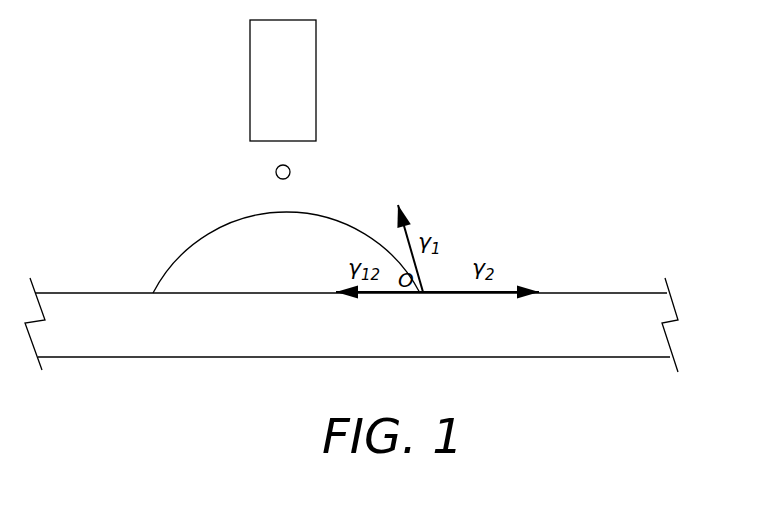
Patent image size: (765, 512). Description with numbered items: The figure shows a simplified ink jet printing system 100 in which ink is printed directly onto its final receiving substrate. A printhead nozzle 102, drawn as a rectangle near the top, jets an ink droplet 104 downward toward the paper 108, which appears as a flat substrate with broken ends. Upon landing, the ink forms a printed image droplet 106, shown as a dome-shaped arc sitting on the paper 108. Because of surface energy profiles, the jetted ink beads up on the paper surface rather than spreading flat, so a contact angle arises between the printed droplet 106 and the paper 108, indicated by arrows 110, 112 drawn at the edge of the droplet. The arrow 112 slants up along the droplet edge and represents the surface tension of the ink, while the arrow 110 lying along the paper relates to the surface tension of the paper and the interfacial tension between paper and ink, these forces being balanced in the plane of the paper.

The ink jet printing system 100 is at (497, 128).
The printhead nozzle 102 is at (316, 47).
The ink droplet 104 is at (276, 170).
The printed image droplet 106 is at (202, 242).
The paper 108 is at (555, 357).
The arrow 110 is at (502, 288).
The arrow 112 is at (422, 272).